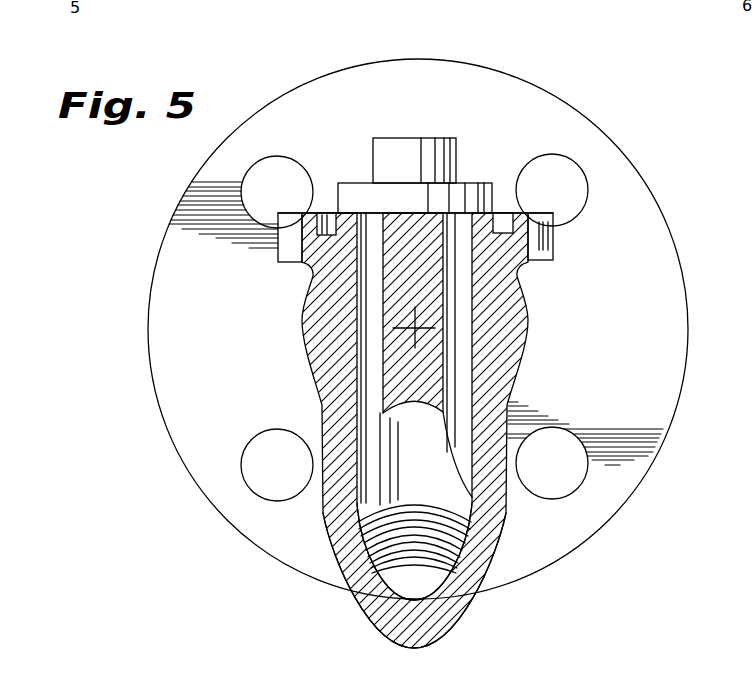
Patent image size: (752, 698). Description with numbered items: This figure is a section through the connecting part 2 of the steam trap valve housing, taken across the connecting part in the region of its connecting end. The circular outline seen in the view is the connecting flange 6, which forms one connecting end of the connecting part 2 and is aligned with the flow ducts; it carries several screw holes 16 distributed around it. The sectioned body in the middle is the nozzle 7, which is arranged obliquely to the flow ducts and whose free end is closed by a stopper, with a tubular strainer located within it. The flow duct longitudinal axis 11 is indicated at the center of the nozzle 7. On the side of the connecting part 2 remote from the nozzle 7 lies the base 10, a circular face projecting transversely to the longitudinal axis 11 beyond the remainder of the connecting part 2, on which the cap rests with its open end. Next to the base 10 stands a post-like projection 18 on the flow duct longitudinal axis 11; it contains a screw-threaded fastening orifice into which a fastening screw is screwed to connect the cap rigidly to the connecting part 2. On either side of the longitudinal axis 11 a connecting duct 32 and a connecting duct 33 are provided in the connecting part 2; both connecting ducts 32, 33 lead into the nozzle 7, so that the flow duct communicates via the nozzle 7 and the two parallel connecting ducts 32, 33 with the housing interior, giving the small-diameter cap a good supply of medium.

The connecting part 2 is at (536, 313).
The connecting flange 6 is at (305, 120).
The nozzle 7 is at (465, 597).
The base 10 is at (522, 233).
The longitudinal axis 11 is at (405, 330).
The screw holes 16 is at (560, 172).
The projection 18 is at (411, 153).
The connecting duct 32 is at (462, 357).
The connecting duct 33 is at (374, 368).